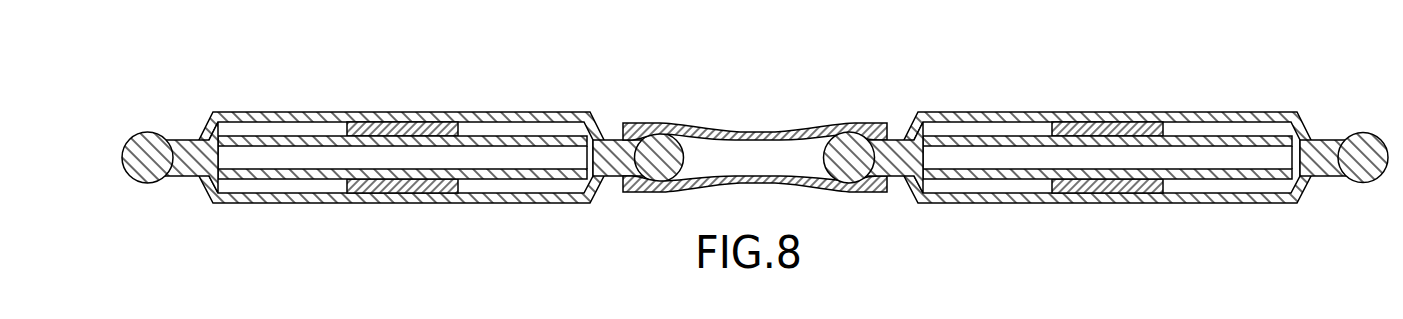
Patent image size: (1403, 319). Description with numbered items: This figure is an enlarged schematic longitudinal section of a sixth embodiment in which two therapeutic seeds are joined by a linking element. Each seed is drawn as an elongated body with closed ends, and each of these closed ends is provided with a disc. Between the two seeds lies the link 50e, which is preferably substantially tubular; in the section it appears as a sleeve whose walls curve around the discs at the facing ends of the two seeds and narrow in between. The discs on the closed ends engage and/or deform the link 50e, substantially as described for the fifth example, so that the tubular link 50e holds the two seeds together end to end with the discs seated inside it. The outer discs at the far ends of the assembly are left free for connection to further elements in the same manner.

The link 50e is at (756, 132).